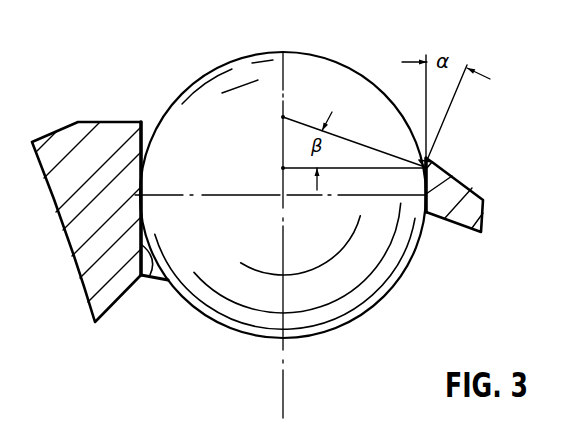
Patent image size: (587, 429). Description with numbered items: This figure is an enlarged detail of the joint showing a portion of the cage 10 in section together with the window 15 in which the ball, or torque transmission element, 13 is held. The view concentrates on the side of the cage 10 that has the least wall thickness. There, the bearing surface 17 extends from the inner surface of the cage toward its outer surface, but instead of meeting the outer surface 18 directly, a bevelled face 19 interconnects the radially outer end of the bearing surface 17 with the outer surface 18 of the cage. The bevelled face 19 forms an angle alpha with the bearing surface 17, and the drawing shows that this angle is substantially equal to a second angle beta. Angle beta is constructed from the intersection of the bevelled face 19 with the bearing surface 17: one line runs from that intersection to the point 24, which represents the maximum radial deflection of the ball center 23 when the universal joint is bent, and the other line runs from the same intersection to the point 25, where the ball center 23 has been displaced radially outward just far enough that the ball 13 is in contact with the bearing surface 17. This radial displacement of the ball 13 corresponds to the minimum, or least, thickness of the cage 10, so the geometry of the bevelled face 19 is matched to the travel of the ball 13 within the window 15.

The cage 10 is at (100, 270).
The ball 13 is at (367, 262).
The window 15 is at (152, 265).
The bearing surface 17 is at (410, 202).
The outer surface 18 is at (467, 180).
The bevelled face 19 is at (421, 158).
The ball center 23 is at (282, 194).
The point 24 is at (285, 116).
The point 25 is at (283, 168).